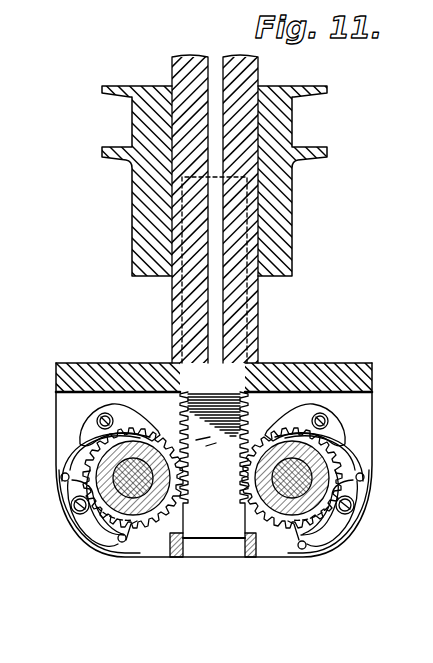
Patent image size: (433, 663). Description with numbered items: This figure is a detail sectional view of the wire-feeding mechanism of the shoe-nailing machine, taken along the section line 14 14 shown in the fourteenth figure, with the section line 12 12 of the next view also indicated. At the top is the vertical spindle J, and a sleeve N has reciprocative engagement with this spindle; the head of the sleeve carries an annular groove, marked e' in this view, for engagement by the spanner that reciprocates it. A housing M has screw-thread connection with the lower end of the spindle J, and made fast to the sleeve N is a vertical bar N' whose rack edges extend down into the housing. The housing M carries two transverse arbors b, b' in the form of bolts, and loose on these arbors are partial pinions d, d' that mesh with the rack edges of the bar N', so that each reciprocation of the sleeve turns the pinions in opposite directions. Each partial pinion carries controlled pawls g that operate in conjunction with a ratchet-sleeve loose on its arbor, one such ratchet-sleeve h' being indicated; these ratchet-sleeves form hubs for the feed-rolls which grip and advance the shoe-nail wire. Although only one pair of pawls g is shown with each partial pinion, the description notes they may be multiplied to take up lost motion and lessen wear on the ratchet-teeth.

The spindle J is at (200, 63).
The sleeve N is at (216, 181).
The flange e' is at (308, 127).
The housing M is at (128, 362).
The vertical bar N' is at (214, 425).
The section line 14 14 is at (262, 309).
The section line 12 12 is at (432, 478).
The arbor b is at (133, 478).
The arbor b' is at (292, 478).
The partial pinion d is at (112, 442).
The partial pinion d' is at (309, 442).
The pawl g is at (95, 428).
The ratchet-sleeve h' is at (316, 509).